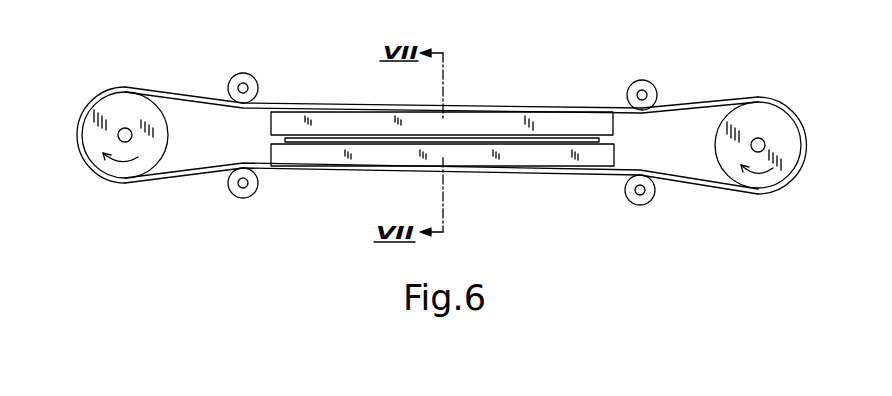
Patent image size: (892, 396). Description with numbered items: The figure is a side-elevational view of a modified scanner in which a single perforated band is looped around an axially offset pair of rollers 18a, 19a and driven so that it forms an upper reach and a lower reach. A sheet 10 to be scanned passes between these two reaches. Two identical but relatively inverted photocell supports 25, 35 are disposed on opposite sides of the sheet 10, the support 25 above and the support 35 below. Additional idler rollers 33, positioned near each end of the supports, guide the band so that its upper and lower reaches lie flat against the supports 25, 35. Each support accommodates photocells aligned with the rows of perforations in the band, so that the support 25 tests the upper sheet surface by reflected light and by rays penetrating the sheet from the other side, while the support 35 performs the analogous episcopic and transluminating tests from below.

The roller 18a is at (107, 110).
The roller 19a is at (773, 123).
The idler rollers 33 is at (234, 76).
The photocell support 25 is at (512, 123).
The sheet 10 is at (530, 145).
The photocell support 35 is at (310, 155).